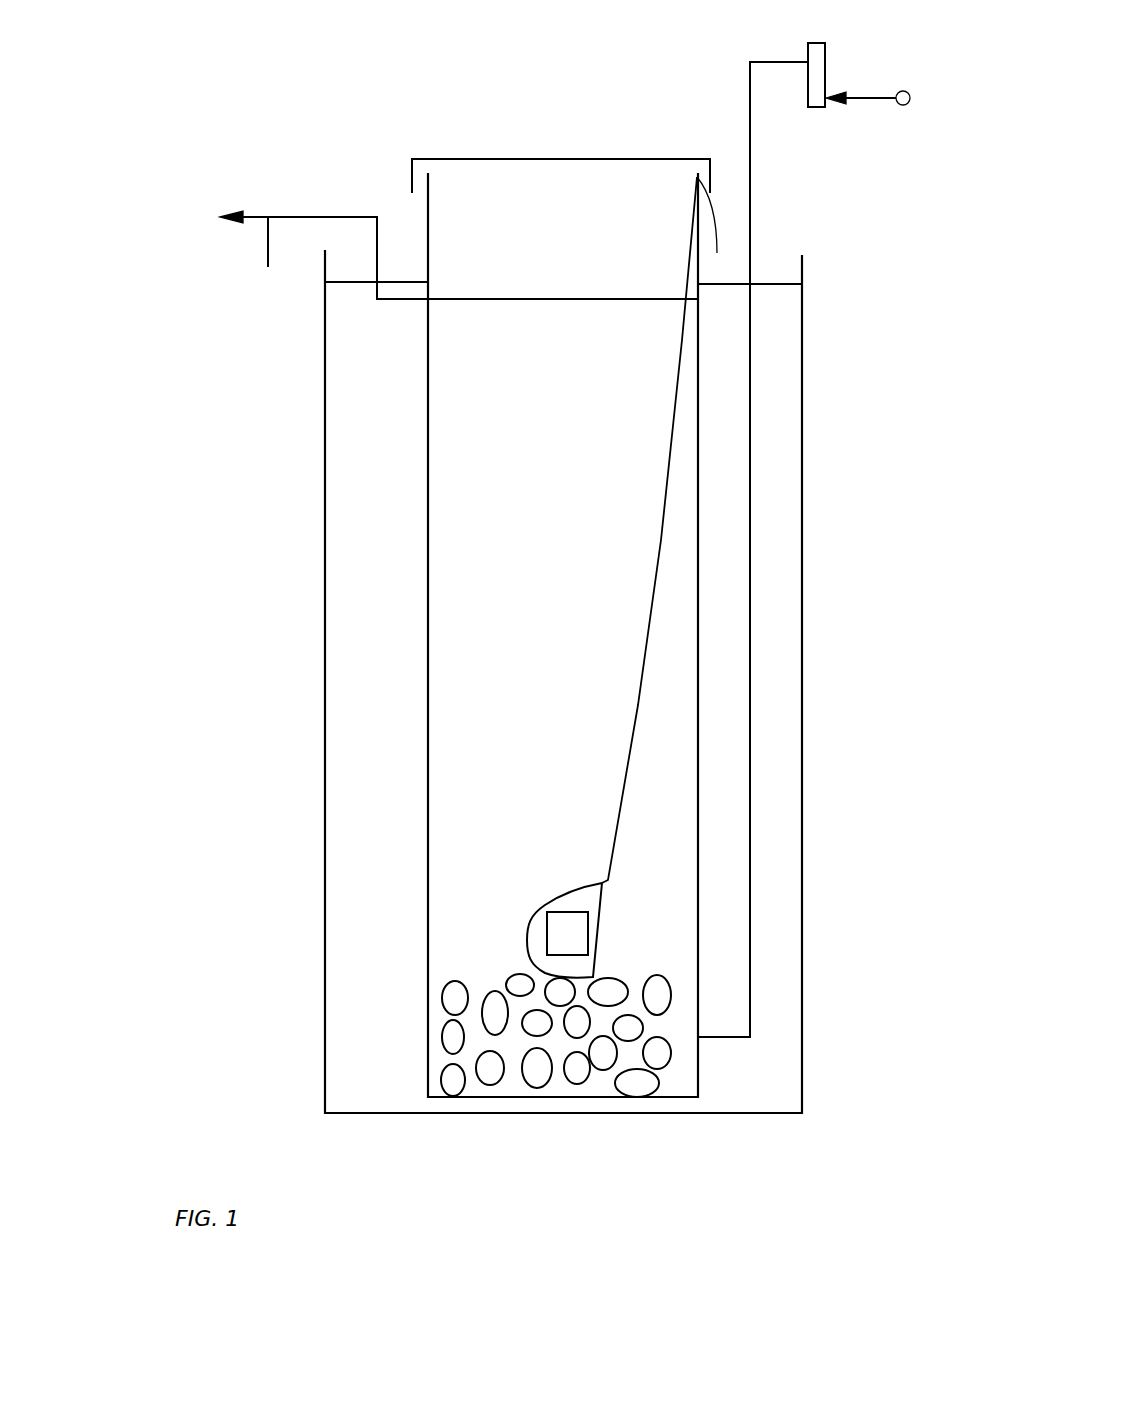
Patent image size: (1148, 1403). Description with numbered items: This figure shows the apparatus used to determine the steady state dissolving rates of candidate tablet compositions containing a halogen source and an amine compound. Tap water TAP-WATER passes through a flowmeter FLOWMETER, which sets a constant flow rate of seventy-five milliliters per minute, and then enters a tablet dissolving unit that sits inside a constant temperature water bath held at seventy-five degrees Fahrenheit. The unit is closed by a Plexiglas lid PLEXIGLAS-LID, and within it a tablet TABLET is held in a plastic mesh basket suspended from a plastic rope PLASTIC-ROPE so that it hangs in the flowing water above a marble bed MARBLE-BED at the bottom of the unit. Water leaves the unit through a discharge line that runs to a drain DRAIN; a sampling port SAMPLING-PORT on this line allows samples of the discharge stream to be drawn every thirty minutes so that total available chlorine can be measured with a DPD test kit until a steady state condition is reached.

The Plexiglas lid PLEXIGLAS-LID is at (565, 157).
The drain DRAIN is at (193, 217).
The sampling port SAMPLING-PORT is at (268, 267).
The flowmeter FLOWMETER is at (808, 60).
The tap water TAP-WATER is at (903, 91).
The plastic rope PLASTIC-ROPE is at (640, 705).
The tablet TABLET is at (572, 912).
The marble bed MARBLE-BED is at (530, 1088).